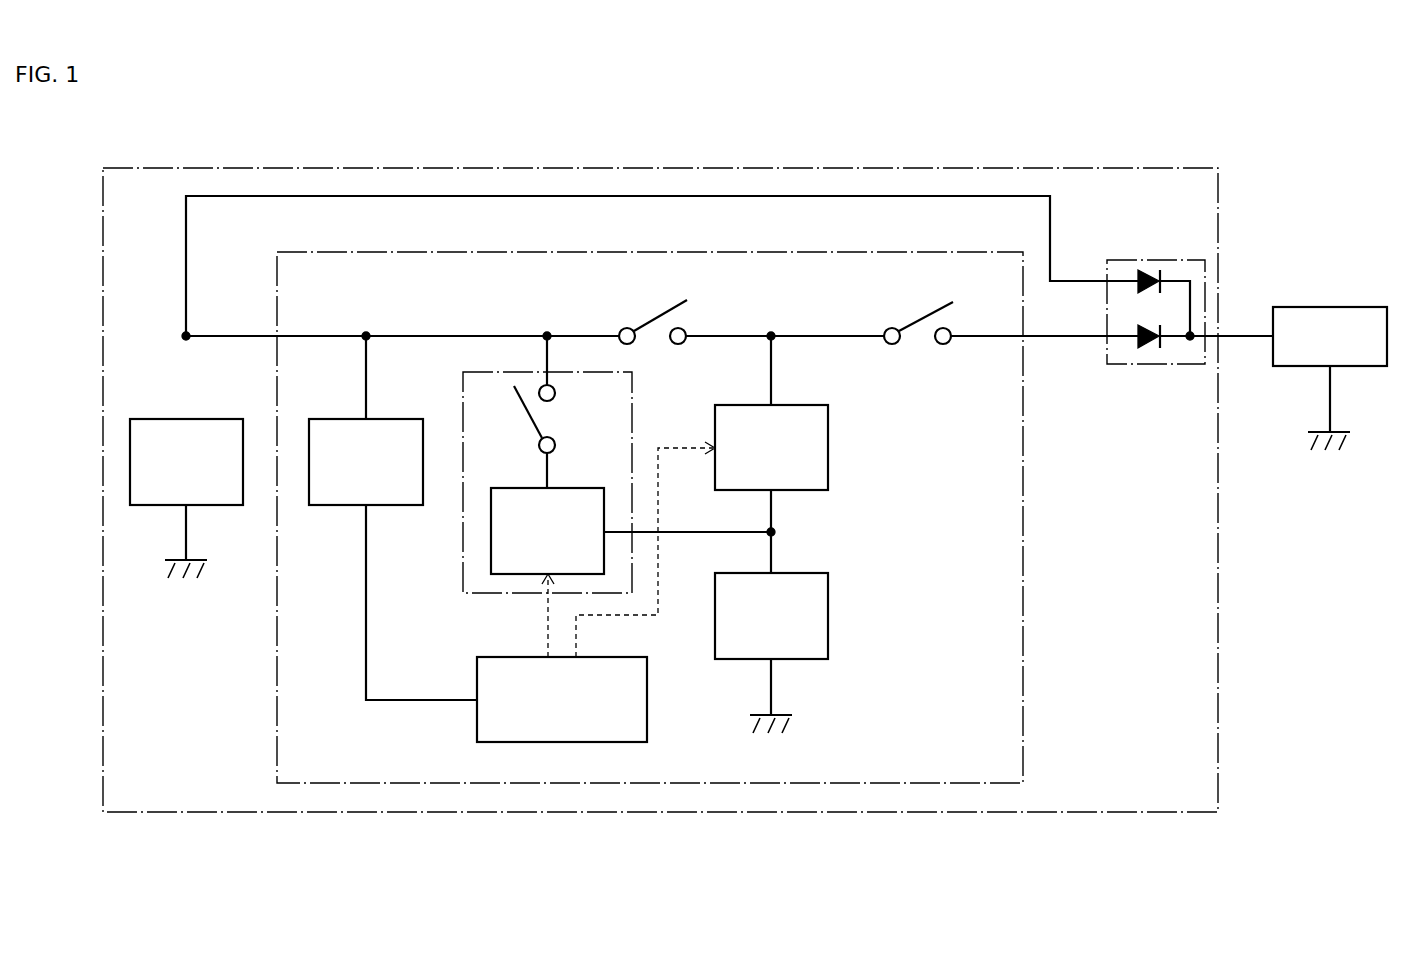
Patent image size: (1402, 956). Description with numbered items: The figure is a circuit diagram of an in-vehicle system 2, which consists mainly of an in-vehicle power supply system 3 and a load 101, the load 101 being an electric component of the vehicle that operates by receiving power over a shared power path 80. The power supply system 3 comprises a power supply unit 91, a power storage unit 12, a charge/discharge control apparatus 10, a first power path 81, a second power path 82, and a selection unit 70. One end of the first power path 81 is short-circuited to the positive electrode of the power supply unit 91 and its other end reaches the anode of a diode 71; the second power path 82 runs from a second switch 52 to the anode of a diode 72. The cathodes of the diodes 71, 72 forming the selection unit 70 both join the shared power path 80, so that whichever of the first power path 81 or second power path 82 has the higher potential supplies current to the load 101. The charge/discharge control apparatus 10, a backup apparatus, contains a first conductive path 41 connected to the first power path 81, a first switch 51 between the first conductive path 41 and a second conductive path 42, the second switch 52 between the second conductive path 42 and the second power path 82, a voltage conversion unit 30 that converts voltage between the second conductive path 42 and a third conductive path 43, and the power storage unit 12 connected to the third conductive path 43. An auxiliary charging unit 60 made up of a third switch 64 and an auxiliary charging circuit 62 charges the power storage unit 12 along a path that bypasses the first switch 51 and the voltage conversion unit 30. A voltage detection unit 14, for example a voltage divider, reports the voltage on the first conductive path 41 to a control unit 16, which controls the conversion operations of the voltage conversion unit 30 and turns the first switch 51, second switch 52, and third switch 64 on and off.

The in-vehicle system 2 is at (1298, 155).
The in-vehicle power supply system 3 is at (1219, 218).
The charge/discharge control apparatus 10 is at (1025, 438).
The power storage unit 12 is at (828, 617).
The voltage detection unit 14 is at (389, 418).
The control unit 16 is at (647, 698).
The voltage conversion unit 30 is at (828, 445).
The first conductive path 41 is at (311, 333).
The second conductive path 42 is at (812, 333).
The third conductive path 43 is at (773, 540).
The first switch 51 is at (646, 323).
The second switch 52 is at (918, 318).
The auxiliary charging unit 60 is at (633, 402).
The auxiliary charging circuit 62 is at (578, 488).
The third switch 64 is at (532, 423).
The selection unit 70 is at (1163, 260).
The diode 71 is at (1150, 272).
The diode 72 is at (1147, 350).
The shared power path 80 is at (1243, 335).
The first power path 81 is at (1000, 197).
The second power path 82 is at (1087, 338).
The power supply unit 91 is at (216, 418).
The load 101 is at (1353, 307).